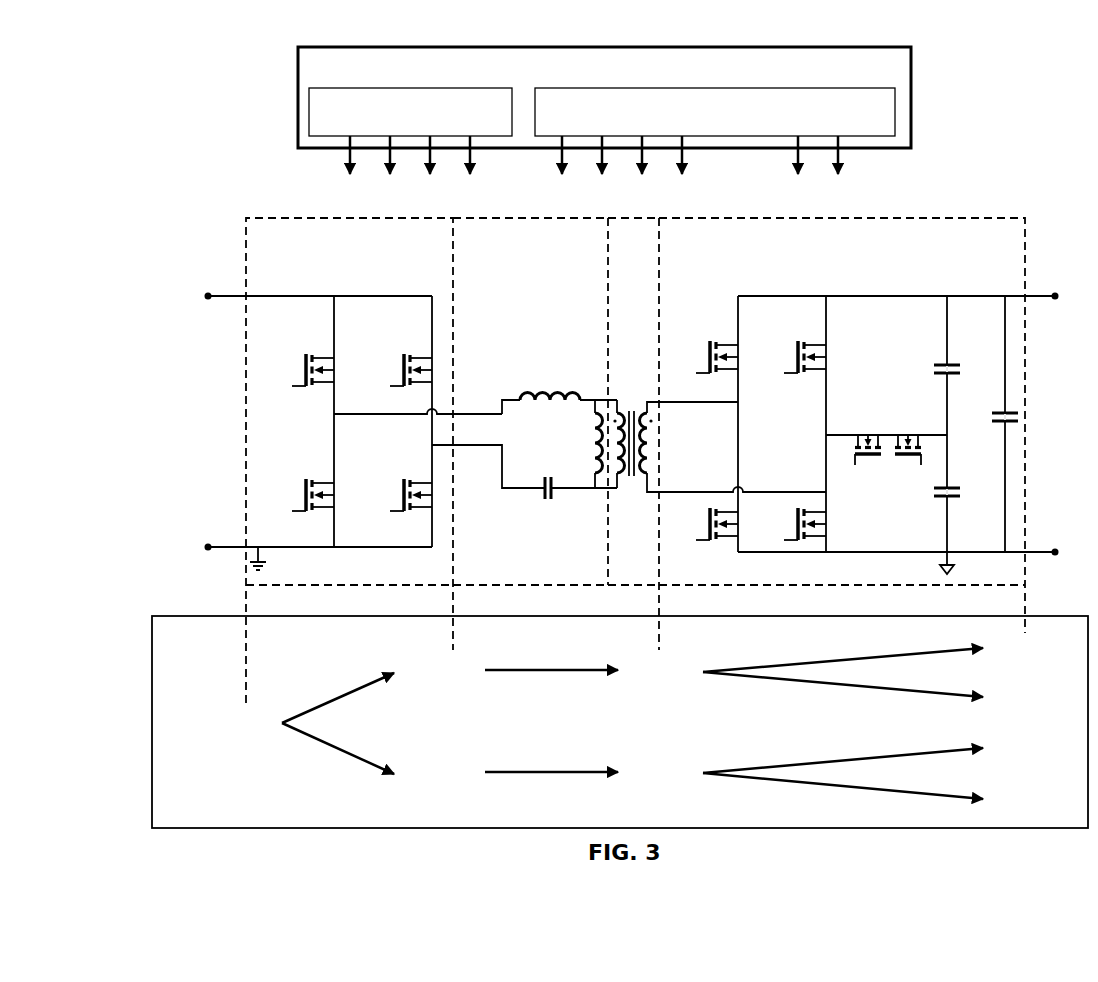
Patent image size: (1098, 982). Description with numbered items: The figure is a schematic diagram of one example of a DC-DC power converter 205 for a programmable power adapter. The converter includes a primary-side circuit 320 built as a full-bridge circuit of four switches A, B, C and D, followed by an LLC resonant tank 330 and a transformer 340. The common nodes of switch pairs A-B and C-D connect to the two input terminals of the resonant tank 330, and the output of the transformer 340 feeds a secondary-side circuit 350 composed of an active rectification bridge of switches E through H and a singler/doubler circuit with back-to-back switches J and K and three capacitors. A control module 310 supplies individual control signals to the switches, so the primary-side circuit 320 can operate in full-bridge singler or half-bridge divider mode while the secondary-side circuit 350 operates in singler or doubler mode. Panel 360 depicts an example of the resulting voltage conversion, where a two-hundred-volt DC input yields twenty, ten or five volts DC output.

The DC-DC power converter 205 is at (203, 148).
The control module 310 is at (912, 101).
The primary-side circuit 320 is at (440, 576).
The LLC resonant tank 330 is at (599, 576).
The transformer 340 is at (650, 576).
The secondary-side circuit 350 is at (1018, 576).
The panel 360 is at (186, 815).